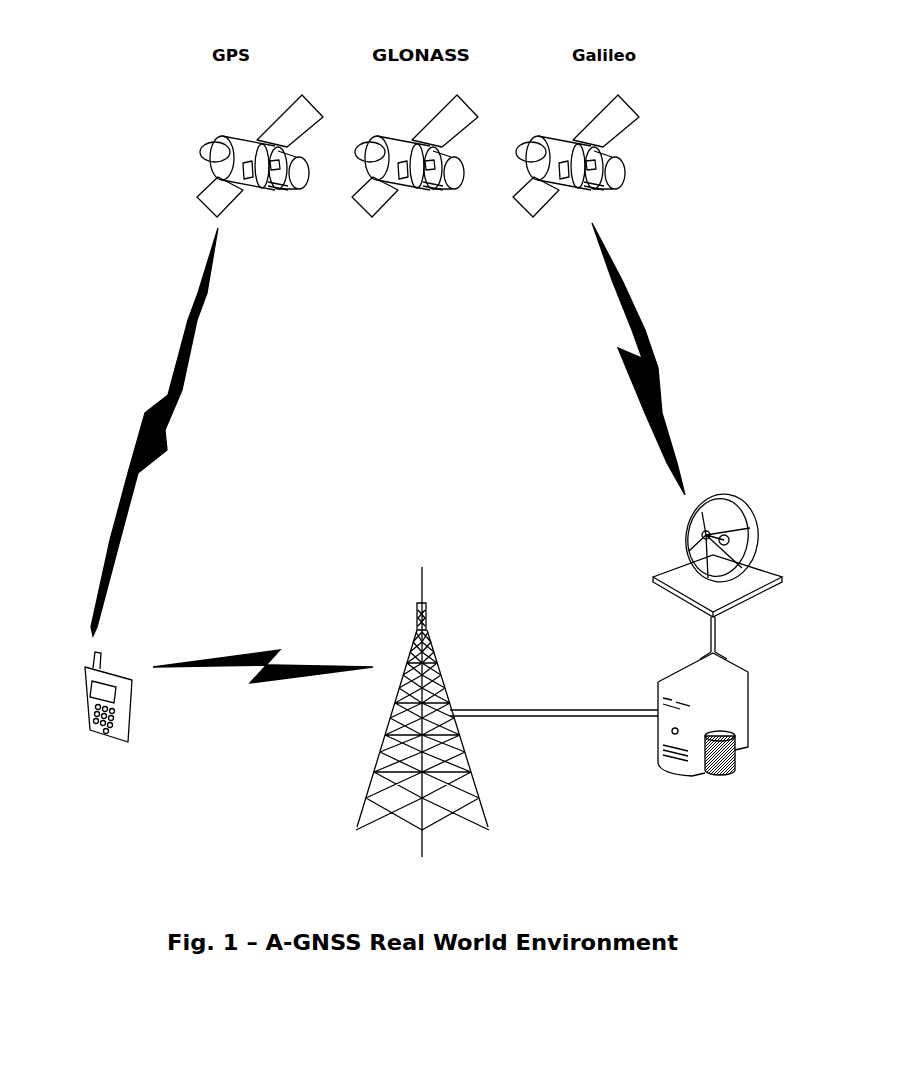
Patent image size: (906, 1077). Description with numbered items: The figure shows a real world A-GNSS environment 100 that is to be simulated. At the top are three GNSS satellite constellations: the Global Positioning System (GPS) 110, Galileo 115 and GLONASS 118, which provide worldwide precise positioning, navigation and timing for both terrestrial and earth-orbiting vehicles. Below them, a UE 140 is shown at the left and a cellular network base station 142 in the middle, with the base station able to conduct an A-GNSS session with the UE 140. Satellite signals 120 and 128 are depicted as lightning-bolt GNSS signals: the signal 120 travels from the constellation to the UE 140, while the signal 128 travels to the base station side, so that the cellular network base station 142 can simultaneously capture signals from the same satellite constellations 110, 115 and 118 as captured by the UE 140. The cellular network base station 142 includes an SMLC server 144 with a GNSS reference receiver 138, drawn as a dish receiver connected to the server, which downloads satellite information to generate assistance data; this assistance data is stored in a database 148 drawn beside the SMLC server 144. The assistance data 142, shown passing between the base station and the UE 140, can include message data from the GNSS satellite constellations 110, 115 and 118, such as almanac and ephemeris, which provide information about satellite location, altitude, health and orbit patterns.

The real world A-GNSS environment 100 is at (734, 23).
The Global Positioning System satellite constellation 110 is at (202, 152).
The Galileo satellite constellation 115 is at (432, 207).
The GLONASS satellite constellation 118 is at (640, 162).
The signal 120 is at (195, 325).
The signal 128 is at (622, 287).
The GNSS reference receiver 138 is at (700, 508).
The UE 140 is at (100, 695).
The cellular network base station 142 is at (233, 603).
The SMLC server 144 is at (658, 737).
The database 148 is at (735, 772).